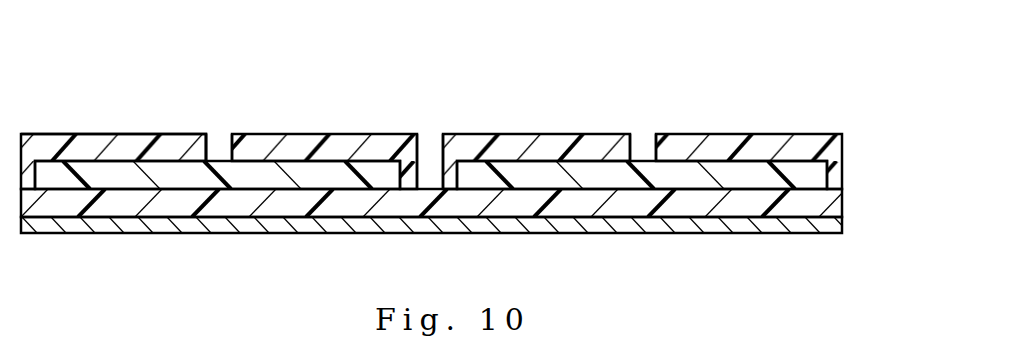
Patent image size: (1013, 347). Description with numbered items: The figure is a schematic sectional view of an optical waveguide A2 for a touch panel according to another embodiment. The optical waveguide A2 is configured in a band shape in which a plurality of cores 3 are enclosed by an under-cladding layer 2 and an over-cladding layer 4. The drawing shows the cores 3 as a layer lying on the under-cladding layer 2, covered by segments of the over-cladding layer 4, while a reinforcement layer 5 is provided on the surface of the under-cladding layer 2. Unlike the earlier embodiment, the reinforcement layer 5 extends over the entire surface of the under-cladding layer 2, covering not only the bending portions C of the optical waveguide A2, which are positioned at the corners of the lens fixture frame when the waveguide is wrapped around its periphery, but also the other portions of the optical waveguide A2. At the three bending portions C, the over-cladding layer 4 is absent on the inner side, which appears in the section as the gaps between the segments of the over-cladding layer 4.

The under-cladding layer 2 is at (815, 212).
The cores 3 is at (820, 173).
The over-cladding layer 4 is at (823, 140).
The reinforcement layer 5 is at (833, 222).
The optical waveguide A2 is at (160, 124).
The bending portions C is at (222, 124).